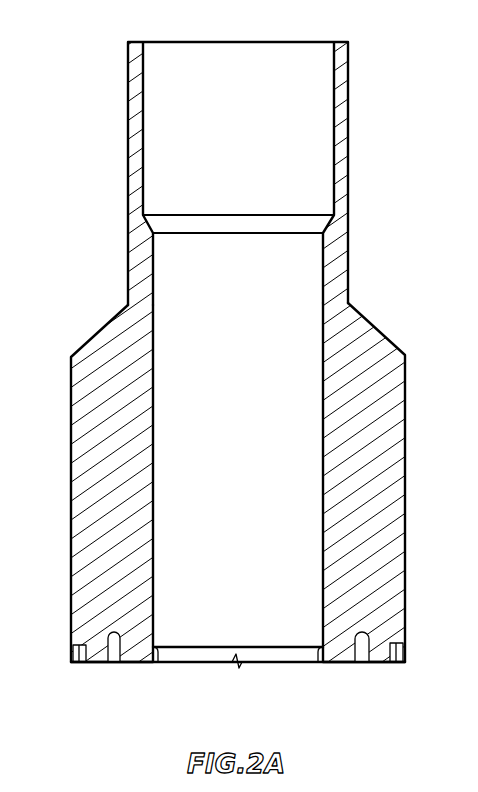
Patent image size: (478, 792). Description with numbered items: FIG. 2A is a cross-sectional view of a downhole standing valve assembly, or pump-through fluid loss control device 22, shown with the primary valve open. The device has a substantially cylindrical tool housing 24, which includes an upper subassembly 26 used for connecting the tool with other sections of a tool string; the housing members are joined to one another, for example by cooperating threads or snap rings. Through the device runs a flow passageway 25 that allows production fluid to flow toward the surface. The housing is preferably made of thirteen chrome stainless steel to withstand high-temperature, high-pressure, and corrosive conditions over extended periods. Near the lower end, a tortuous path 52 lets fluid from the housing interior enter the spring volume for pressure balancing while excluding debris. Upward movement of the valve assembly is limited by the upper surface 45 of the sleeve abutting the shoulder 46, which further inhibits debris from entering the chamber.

The pump-through fluid loss control device 22 is at (231, 396).
The tool housing 24 is at (407, 366).
The flow passageway 25 is at (290, 263).
The upper subassembly 26 is at (350, 157).
The upper surface 45 is at (154, 662).
The shoulder 46 is at (154, 657).
The tortuous path 52 is at (105, 638).